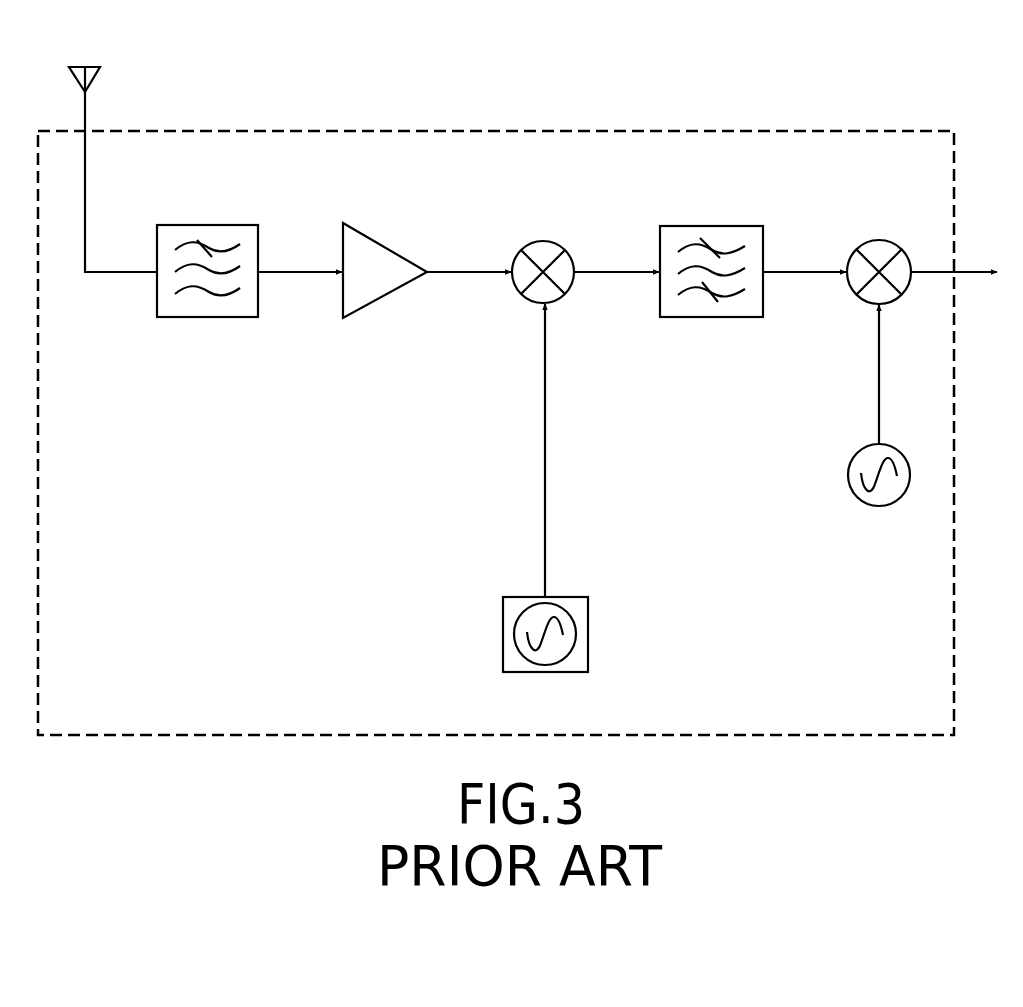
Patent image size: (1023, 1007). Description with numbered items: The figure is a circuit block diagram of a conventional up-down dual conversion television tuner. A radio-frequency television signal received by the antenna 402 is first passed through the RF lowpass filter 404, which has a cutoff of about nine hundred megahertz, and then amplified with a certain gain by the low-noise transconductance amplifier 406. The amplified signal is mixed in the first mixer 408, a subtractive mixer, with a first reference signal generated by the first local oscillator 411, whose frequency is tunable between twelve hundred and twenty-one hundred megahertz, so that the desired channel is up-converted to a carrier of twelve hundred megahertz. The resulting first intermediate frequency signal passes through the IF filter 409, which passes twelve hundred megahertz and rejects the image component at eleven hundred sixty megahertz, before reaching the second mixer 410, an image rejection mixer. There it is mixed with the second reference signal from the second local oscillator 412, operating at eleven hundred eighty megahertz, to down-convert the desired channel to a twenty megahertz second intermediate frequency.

The antenna 402 is at (92, 66).
The RF lowpass filter 404 is at (200, 317).
The low-noise transconductance amplifier 406 is at (375, 262).
The first mixer 408 is at (524, 300).
The IF filter 409 is at (708, 226).
The second mixer 410 is at (898, 298).
The first local oscillator 411 is at (522, 597).
The second local oscillator 412 is at (849, 465).